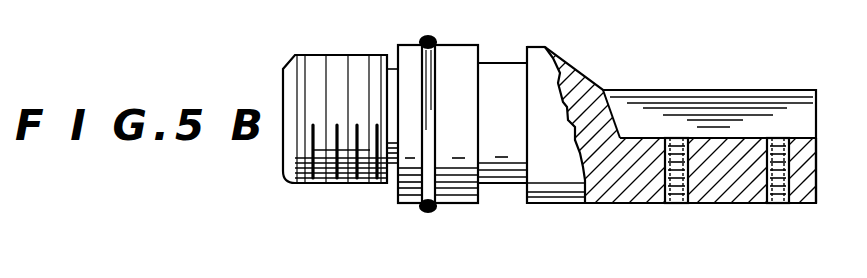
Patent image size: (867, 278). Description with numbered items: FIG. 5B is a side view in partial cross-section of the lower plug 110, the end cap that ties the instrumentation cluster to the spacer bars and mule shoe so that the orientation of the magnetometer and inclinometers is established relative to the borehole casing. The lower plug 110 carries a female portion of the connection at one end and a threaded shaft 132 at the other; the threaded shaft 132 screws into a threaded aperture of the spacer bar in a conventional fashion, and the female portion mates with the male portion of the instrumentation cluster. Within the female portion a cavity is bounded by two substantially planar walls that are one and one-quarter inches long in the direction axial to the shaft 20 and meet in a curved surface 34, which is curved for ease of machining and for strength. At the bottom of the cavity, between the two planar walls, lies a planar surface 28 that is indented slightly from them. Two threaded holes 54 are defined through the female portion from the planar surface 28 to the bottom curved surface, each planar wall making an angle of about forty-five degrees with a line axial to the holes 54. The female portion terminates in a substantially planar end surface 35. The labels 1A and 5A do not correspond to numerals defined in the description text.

The threaded shaft 132 is at (330, 185).
The shaft 20 is at (500, 185).
The lower plug 110 is at (547, 34).
The curved surface 34 is at (588, 80).
The connector body 1A is at (667, 85).
The planar surface 28 is at (743, 138).
The contact retention slot 5A is at (683, 203).
The threaded holes 54 is at (778, 203).
The end surface 35 is at (812, 178).